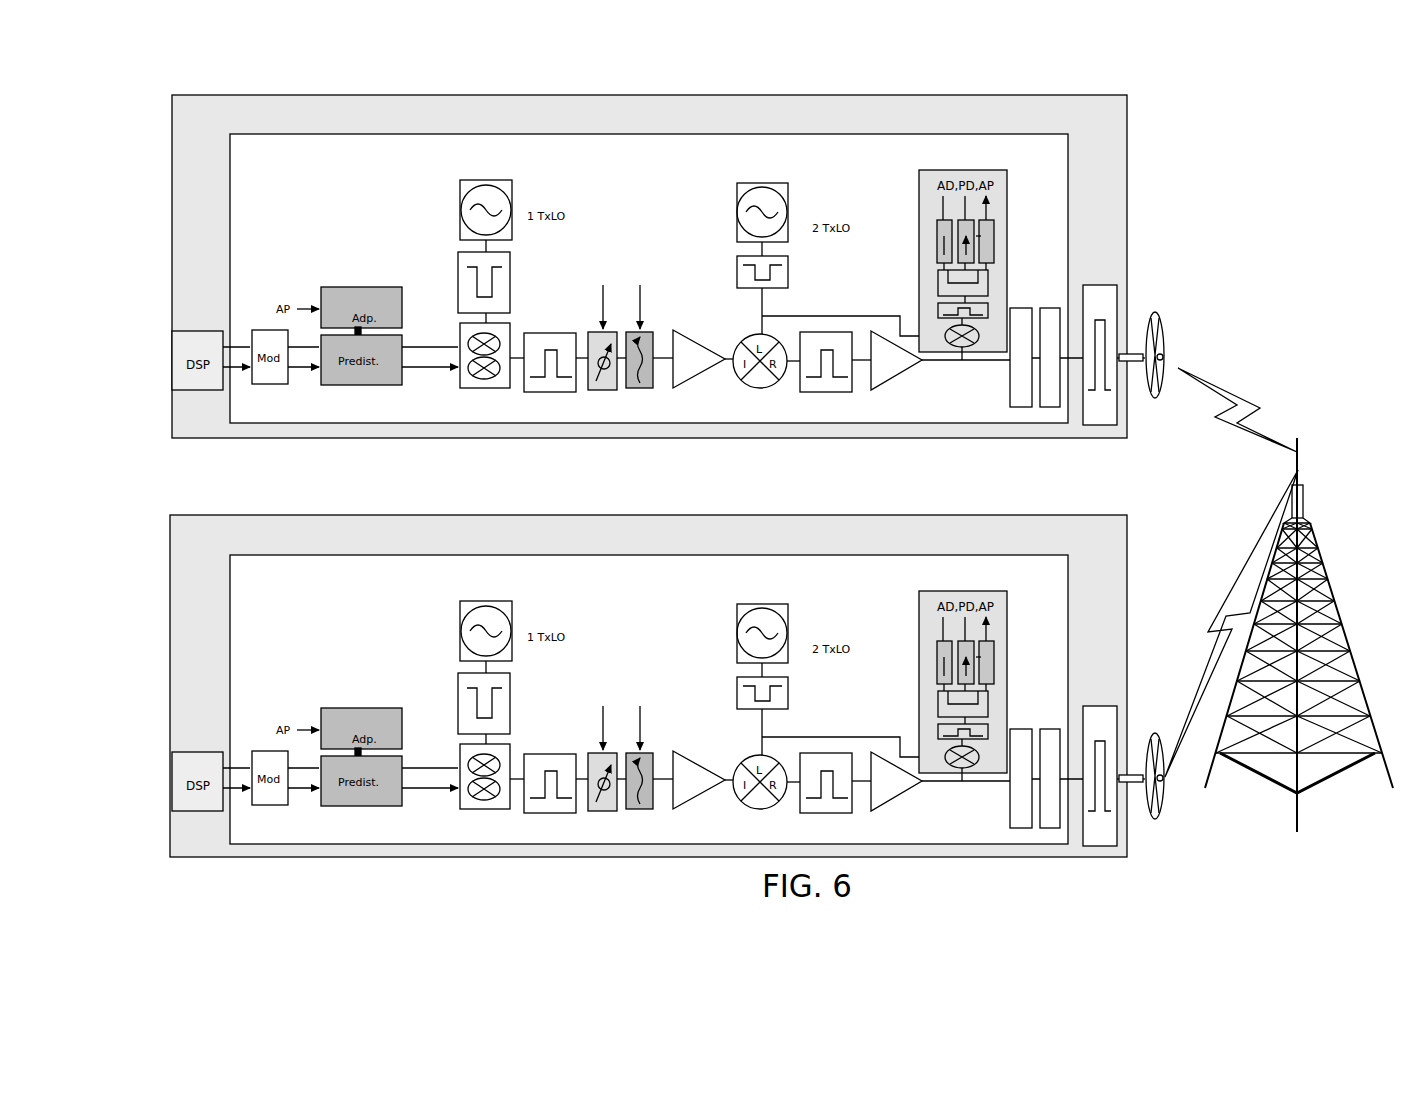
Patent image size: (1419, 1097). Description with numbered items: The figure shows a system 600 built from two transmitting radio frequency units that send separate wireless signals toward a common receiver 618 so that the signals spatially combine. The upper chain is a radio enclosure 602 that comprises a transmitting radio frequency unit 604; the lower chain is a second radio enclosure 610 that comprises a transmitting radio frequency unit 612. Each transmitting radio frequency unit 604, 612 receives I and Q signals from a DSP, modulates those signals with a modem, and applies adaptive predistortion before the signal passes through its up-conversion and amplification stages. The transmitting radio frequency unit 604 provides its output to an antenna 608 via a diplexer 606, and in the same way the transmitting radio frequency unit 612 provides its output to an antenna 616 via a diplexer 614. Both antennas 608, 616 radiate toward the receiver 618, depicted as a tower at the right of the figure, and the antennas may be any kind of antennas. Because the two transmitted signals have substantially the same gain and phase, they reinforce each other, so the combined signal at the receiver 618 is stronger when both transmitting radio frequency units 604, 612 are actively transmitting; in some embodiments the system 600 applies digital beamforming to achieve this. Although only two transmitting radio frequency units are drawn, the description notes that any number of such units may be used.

The system 600 is at (215, 68).
The radio enclosure 602 is at (672, 238).
The transmitting radio frequency unit 604 is at (570, 135).
The diplexer 606 is at (1100, 288).
The antenna 608 is at (1155, 312).
The radio enclosure 610 is at (671, 655).
The transmitting radio frequency unit 612 is at (568, 556).
The diplexer 614 is at (1098, 708).
The antenna 616 is at (1155, 737).
The receiver 618 is at (1328, 605).